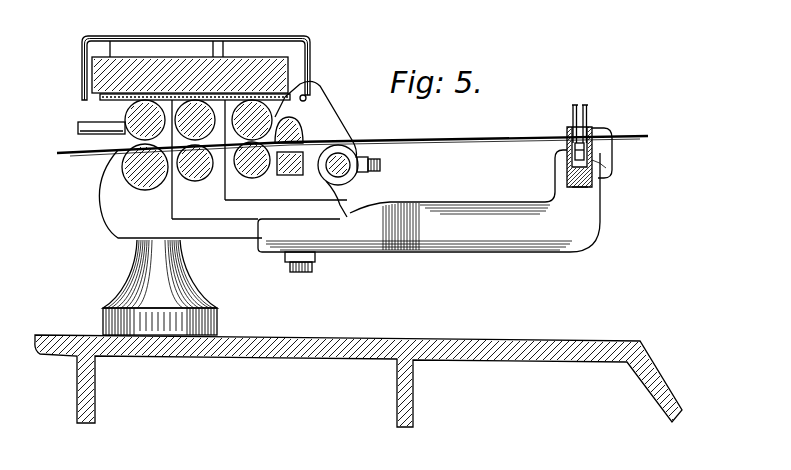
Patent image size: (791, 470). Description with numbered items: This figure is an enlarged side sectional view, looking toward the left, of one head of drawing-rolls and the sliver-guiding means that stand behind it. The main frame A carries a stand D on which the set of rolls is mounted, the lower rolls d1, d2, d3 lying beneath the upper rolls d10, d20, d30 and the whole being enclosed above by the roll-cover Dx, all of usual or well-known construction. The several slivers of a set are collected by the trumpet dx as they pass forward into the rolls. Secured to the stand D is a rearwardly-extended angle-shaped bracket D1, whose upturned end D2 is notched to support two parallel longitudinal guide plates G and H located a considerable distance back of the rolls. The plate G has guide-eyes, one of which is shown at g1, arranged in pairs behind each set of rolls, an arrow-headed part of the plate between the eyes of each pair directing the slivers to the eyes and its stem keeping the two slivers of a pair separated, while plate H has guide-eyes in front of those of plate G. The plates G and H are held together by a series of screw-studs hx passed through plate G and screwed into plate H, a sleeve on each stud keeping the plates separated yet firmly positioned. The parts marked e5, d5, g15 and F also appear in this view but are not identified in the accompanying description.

The roll-cover Dx is at (178, 37).
The upper roll d20 is at (196, 112).
The upper roll d10 is at (123, 114).
The lower roll d1 is at (146, 190).
The lower roll d2 is at (197, 181).
The lower roll d3 is at (254, 178).
The trumpet dx is at (296, 176).
The upper roll d30 is at (263, 115).
The guide-eye g1 is at (438, 140).
The bracket D1 is at (490, 243).
The upturned end of bracket D2 is at (560, 165).
The guide plate H is at (567, 132).
The screw-stud hx is at (590, 157).
The rod e5 is at (573, 104).
The rod d5 is at (586, 108).
The guide plate G is at (594, 129).
The spring g15 is at (606, 168).
The stop F is at (590, 186).
The stand D is at (128, 270).
The main frame A is at (282, 362).